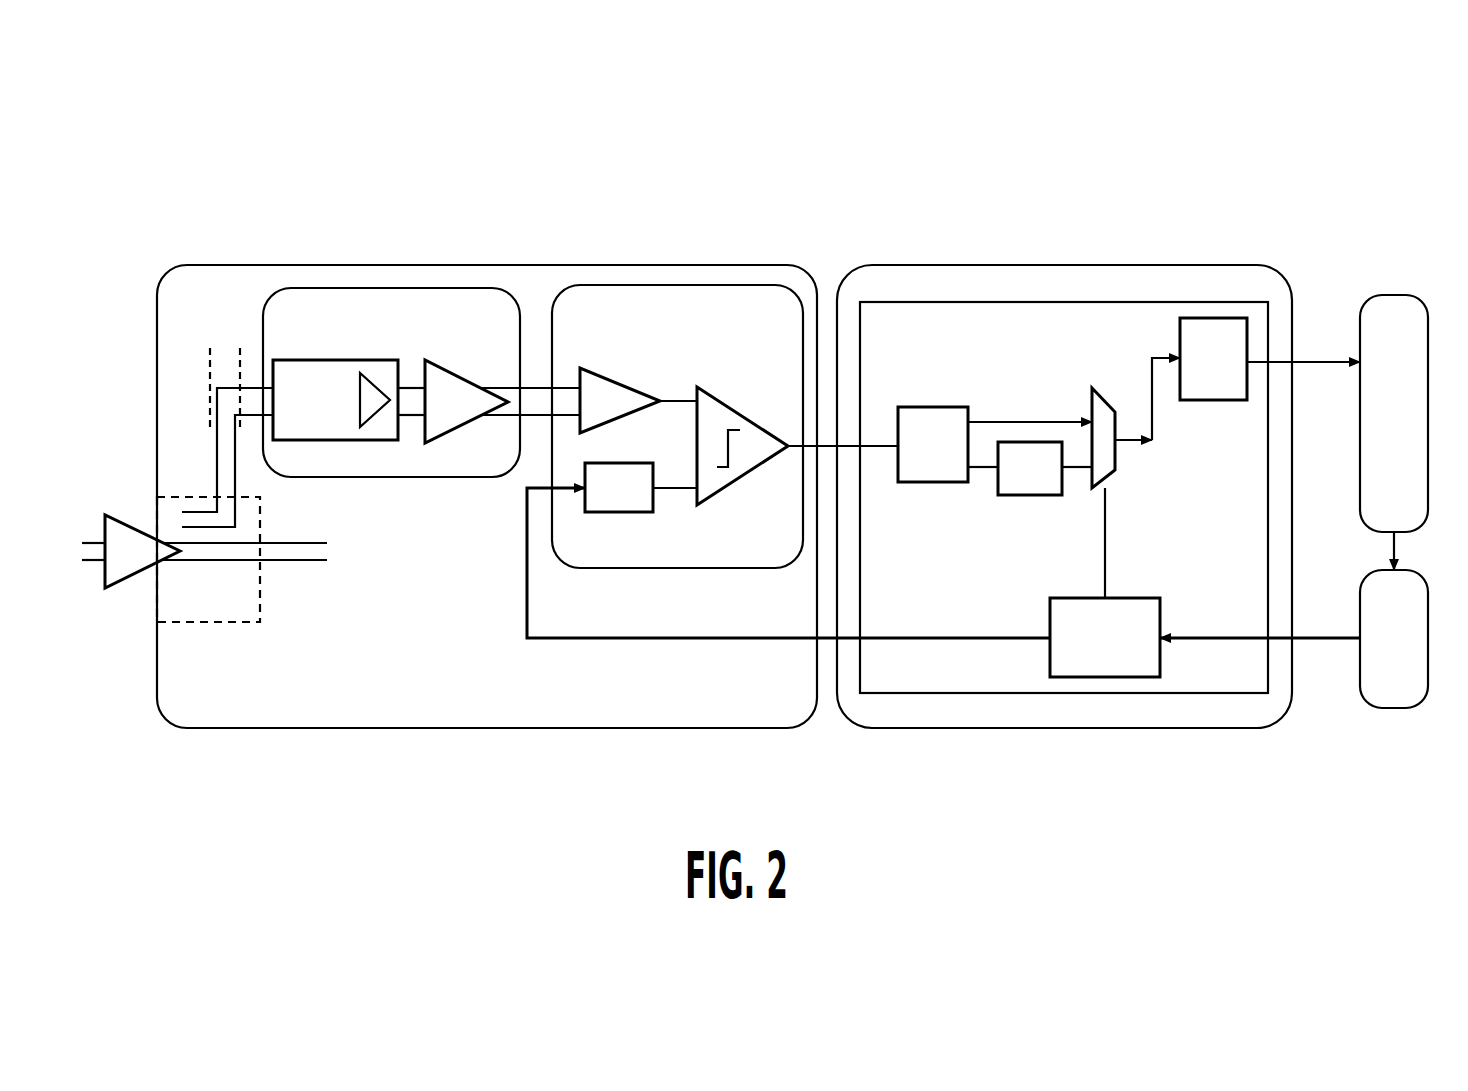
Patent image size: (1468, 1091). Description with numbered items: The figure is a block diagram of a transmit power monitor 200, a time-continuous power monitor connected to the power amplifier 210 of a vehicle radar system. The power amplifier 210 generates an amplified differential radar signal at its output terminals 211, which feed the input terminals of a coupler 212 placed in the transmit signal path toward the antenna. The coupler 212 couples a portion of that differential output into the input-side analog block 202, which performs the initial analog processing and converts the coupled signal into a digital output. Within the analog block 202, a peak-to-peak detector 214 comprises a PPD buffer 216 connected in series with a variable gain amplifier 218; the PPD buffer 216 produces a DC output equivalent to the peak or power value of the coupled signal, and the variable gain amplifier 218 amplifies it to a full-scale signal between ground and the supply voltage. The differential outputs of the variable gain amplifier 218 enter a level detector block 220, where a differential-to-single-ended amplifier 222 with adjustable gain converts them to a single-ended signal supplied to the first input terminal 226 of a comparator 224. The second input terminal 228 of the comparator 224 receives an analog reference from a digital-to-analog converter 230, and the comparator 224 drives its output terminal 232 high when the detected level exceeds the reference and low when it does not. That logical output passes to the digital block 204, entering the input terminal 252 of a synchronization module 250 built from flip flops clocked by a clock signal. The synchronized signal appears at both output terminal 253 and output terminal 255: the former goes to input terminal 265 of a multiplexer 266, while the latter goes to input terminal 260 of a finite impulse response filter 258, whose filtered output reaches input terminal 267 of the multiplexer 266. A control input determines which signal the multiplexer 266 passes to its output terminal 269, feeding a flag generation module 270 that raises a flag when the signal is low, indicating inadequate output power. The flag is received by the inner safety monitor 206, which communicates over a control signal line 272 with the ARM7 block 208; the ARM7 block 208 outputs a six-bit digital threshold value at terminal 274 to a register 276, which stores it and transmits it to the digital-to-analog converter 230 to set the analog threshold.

The transmit power monitor 200 is at (1282, 173).
The input-side analog block 202 is at (335, 265).
The digital block 204 is at (977, 265).
The inner safety monitor 206 is at (1385, 293).
The ARM7 block 208 is at (1385, 708).
The power amplifier 210 is at (117, 513).
The output terminals 211 is at (293, 543).
The coupler 212 is at (205, 623).
The peak-to-peak detector 214 is at (427, 477).
The PPD buffer 216 is at (360, 360).
The variable gain amplifier 218 is at (468, 375).
The level detector block 220 is at (705, 568).
The differential-to-single-ended amplifier 222 is at (615, 382).
The comparator 224 is at (720, 395).
The first input terminal 226 is at (693, 403).
The second input terminal 228 is at (695, 490).
The digital-to-analog converter 230 is at (630, 512).
The output terminal 232 is at (790, 448).
The synchronization module 250 is at (930, 485).
The input terminal 252 is at (895, 442).
The output terminal 253 is at (970, 417).
The output terminal 255 is at (970, 463).
The finite impulse response filter 258 is at (1032, 497).
The input terminal 260 is at (990, 470).
The input terminal 265 is at (1085, 415).
The multiplexer 266 is at (1110, 400).
The input terminal 267 is at (1078, 470).
The output terminal 269 is at (1138, 447).
The flag generation module 270 is at (1193, 400).
The control signal line 272 is at (1393, 543).
The terminal 274 is at (1357, 640).
The register 276 is at (1140, 597).